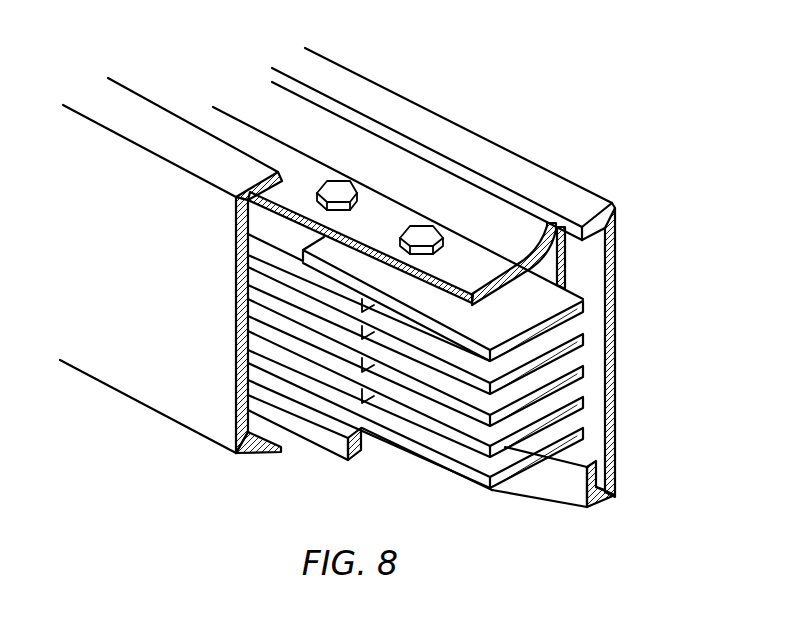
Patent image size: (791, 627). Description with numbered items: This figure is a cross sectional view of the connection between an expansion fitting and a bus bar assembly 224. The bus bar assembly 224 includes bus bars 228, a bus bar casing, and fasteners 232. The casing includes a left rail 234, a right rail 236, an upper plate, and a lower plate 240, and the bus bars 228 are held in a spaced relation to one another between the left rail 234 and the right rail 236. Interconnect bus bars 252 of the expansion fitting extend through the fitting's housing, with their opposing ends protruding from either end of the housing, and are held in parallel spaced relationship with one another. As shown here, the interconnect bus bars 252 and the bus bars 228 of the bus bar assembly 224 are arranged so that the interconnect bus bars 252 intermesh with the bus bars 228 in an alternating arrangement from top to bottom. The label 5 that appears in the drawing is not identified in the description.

The bus bar assembly 224 is at (427, 99).
The bus bars 228 is at (586, 306).
The fasteners 232 is at (338, 188).
The left rail 234 is at (159, 251).
The right rail 236 is at (614, 247).
The lower plate 240 is at (330, 447).
The interconnect bus bars 252 is at (372, 399).
The heat sink module 5 is at (471, 272).